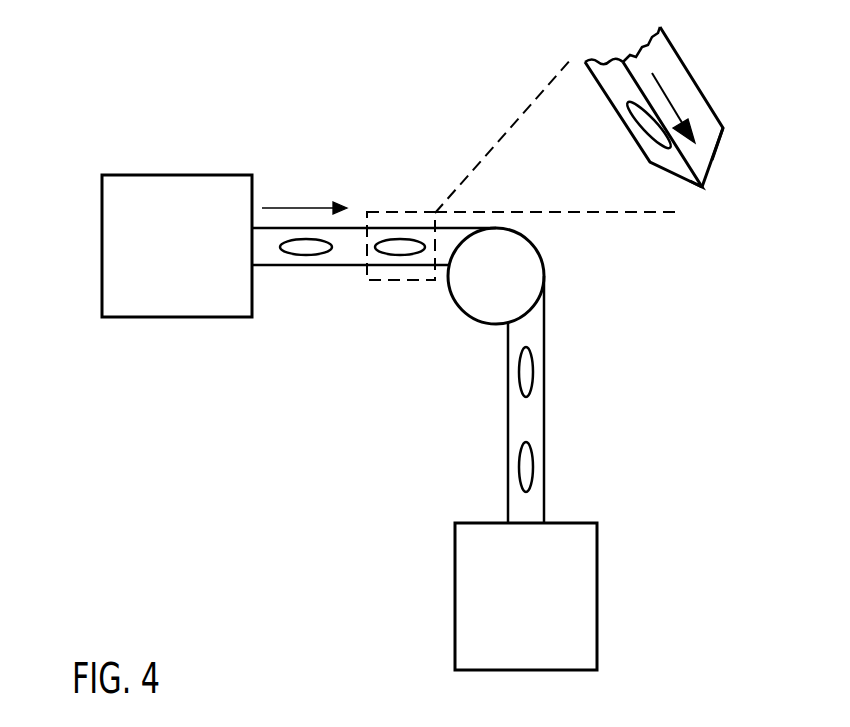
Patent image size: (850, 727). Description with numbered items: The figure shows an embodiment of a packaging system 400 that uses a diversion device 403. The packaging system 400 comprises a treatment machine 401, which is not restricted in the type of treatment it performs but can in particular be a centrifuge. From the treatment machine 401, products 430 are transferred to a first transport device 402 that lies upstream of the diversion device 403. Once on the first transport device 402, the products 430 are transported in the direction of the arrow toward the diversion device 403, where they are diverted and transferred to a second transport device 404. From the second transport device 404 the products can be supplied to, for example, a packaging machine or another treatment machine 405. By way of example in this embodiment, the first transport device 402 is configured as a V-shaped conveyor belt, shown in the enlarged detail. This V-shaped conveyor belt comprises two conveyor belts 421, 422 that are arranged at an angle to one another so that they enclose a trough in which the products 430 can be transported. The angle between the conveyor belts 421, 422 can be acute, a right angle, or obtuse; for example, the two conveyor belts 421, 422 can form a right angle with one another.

The packaging system 400 is at (170, 88).
The treatment machine 401 is at (199, 261).
The first transport device 402 is at (347, 267).
The diversion device 403 is at (525, 270).
The second transport device 404 is at (546, 398).
The packaging machine or another treatment machine 405 is at (547, 606).
The conveyor belt 421 is at (702, 190).
The conveyor belt 422 is at (718, 152).
The products 430 is at (300, 256).